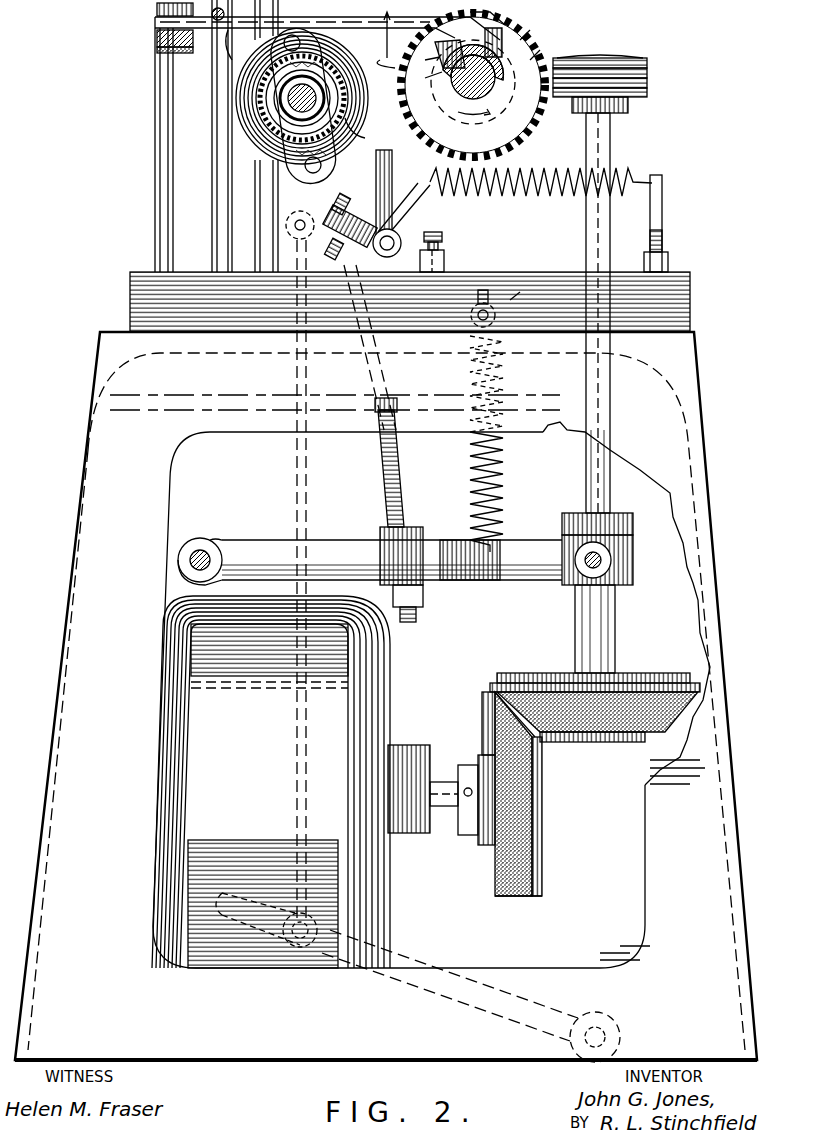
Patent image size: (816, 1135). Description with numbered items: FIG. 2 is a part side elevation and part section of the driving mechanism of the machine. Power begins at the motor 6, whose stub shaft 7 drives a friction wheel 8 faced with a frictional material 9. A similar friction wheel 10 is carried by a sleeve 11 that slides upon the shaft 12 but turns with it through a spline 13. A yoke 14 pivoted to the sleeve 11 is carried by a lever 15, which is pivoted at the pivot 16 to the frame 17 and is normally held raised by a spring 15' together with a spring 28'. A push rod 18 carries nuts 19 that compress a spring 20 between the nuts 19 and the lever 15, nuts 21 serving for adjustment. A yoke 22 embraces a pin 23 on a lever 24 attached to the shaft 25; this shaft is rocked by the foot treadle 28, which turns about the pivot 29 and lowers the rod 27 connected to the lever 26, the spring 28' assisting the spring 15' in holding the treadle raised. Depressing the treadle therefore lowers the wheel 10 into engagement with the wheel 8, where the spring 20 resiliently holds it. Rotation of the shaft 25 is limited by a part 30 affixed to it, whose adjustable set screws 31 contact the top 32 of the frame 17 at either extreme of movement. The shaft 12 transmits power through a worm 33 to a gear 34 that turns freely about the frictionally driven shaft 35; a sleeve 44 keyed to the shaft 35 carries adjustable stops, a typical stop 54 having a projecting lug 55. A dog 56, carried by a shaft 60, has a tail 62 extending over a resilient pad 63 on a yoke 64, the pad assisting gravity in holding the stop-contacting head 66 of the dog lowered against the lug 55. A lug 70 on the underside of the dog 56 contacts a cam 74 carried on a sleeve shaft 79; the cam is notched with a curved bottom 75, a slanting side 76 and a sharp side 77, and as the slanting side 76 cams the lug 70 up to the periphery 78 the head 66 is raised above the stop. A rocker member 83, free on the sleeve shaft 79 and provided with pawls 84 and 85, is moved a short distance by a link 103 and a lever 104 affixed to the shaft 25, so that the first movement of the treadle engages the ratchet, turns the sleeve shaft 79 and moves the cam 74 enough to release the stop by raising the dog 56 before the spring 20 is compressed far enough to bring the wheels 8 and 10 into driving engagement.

The motor 6 is at (388, 660).
The stub shaft 7 is at (446, 780).
The friction wheel 8 is at (485, 728).
The frictional material 9 is at (590, 728).
The friction wheel 10 is at (552, 680).
The sleeve 11 is at (585, 615).
The shaft 12 is at (610, 485).
The spline 13 is at (610, 507).
The yoke 14 is at (633, 560).
The lever 15 is at (392, 544).
The spring 15' is at (506, 444).
The pivot 16 is at (207, 553).
The frame 17 is at (690, 328).
The push rod 18 is at (380, 462).
The nuts 19 is at (400, 430).
The spring 20 is at (405, 480).
The nuts 21 is at (423, 596).
The yoke 22 is at (357, 295).
The pin 23 is at (378, 300).
The lever 24 is at (470, 305).
The shaft 25 is at (444, 265).
The lever 26 is at (286, 232).
The rod 27 is at (298, 755).
The foot treadle 28 is at (450, 985).
The spring 28' is at (549, 213).
The pivot 29 is at (595, 1058).
The part 30 is at (350, 220).
The set screws 31 is at (335, 210).
The top of frame 32 is at (526, 284).
The worm 33 is at (647, 80).
The gear 34 is at (548, 48).
The shaft 35 is at (498, 100).
The sleeve 44 is at (495, 78).
The stop 54 is at (503, 54).
The projecting lug 55 is at (532, 32).
The dog 56 is at (290, 18).
The shaft 60 is at (213, 35).
The tail 62 is at (155, 24).
The resilient pad 63 is at (157, 40).
The yoke 64 is at (165, 51).
The stop contacting head 66 is at (480, 18).
The lug 70 is at (383, 57).
The cam 74 is at (262, 112).
The curved bottom 75 is at (437, 50).
The slanting side 76 is at (385, 30).
The sharp side 77 is at (367, 126).
The periphery 78 is at (395, 147).
The sleeve shaft 79 is at (288, 110).
The rocker member 83 is at (286, 160).
The pawl 84 is at (420, 62).
The pawl 85 is at (421, 78).
The link 103 is at (420, 118).
The lever 104 is at (420, 208).